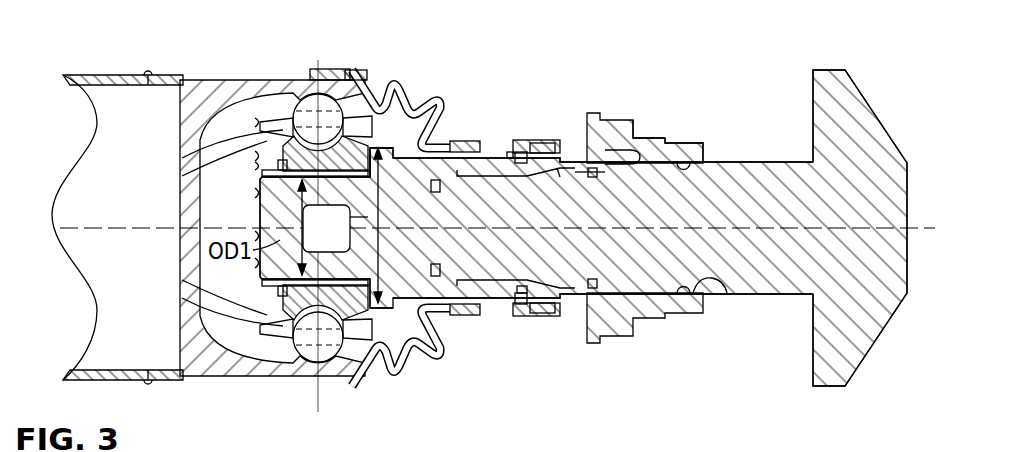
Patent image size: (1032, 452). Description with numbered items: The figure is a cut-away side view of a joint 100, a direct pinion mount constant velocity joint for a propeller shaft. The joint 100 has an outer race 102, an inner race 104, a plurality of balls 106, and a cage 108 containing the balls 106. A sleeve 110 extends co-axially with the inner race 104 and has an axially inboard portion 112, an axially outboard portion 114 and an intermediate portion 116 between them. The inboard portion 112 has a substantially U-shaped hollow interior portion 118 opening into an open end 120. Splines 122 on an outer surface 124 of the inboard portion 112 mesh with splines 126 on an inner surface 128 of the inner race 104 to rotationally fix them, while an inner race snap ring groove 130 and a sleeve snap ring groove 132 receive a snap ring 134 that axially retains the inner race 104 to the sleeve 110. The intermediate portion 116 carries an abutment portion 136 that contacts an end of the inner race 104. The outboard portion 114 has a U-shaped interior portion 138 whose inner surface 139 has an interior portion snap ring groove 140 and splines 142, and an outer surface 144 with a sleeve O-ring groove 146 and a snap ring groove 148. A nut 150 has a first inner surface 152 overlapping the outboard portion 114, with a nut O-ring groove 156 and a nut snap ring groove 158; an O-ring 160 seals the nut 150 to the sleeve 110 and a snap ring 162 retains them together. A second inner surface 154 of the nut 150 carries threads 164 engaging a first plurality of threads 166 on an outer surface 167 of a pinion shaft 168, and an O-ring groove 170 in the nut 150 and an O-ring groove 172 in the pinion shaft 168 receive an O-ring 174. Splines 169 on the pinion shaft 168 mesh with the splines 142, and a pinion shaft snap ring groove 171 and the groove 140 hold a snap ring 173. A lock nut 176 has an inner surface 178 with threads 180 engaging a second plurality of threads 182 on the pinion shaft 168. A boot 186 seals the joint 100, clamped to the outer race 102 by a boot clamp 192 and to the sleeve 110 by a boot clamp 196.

The joint 100 is at (94, 53).
The outer race 102 is at (222, 92).
The inner race 104 is at (347, 373).
The balls 106 is at (307, 353).
The cage 108 is at (277, 338).
The sleeve 110 is at (433, 157).
The axially inboard portion 112 is at (260, 263).
The axially outboard portion 114 is at (527, 173).
The intermediate portion 116 is at (402, 177).
The hollow interior portion 118 is at (260, 215).
The open end 120 is at (262, 236).
The splines 122 is at (352, 238).
The outer surface 124 is at (317, 283).
The splines 126 is at (260, 156).
The inner surface 128 is at (260, 122).
The inner race snap ring groove 130 is at (260, 166).
The sleeve snap ring groove 132 is at (260, 193).
The snap ring 134 is at (268, 176).
The abutment portion 136 is at (400, 90).
The interior portion 138 is at (393, 201).
The inner surface 139 is at (405, 350).
The interior portion snap ring groove 140 is at (436, 276).
The splines 142 is at (507, 183).
The outer surface 144 is at (487, 318).
The sleeve O-ring groove 146 is at (511, 288).
The sleeve outer surface snap ring groove 148 is at (521, 289).
The nut 150 is at (546, 141).
The first inner surface 152 is at (537, 147).
The second inner surface 154 is at (594, 168).
The nut O-ring groove 156 is at (508, 153).
The nut snap ring groove 158 is at (518, 149).
The O-ring 160 is at (507, 292).
The snap ring 162 is at (523, 306).
The threads 164 is at (560, 177).
The first plurality of threads 166 is at (587, 173).
The outer surface 167 is at (597, 280).
The pinion shaft 168 is at (783, 160).
The splines 169 is at (495, 312).
The O-ring groove 170 is at (600, 165).
The pinion shaft snap ring groove 171 is at (440, 190).
The O-ring groove 172 is at (603, 170).
The snap ring 173 is at (436, 264).
The O-ring 174 is at (680, 167).
The lock nut 176 is at (687, 310).
The inner surface 178 is at (652, 163).
The threads 180 is at (700, 163).
The second plurality of threads 182 is at (713, 287).
The boot 186 is at (362, 73).
The boot clamp 192 is at (312, 70).
The boot clamp 196 is at (452, 143).